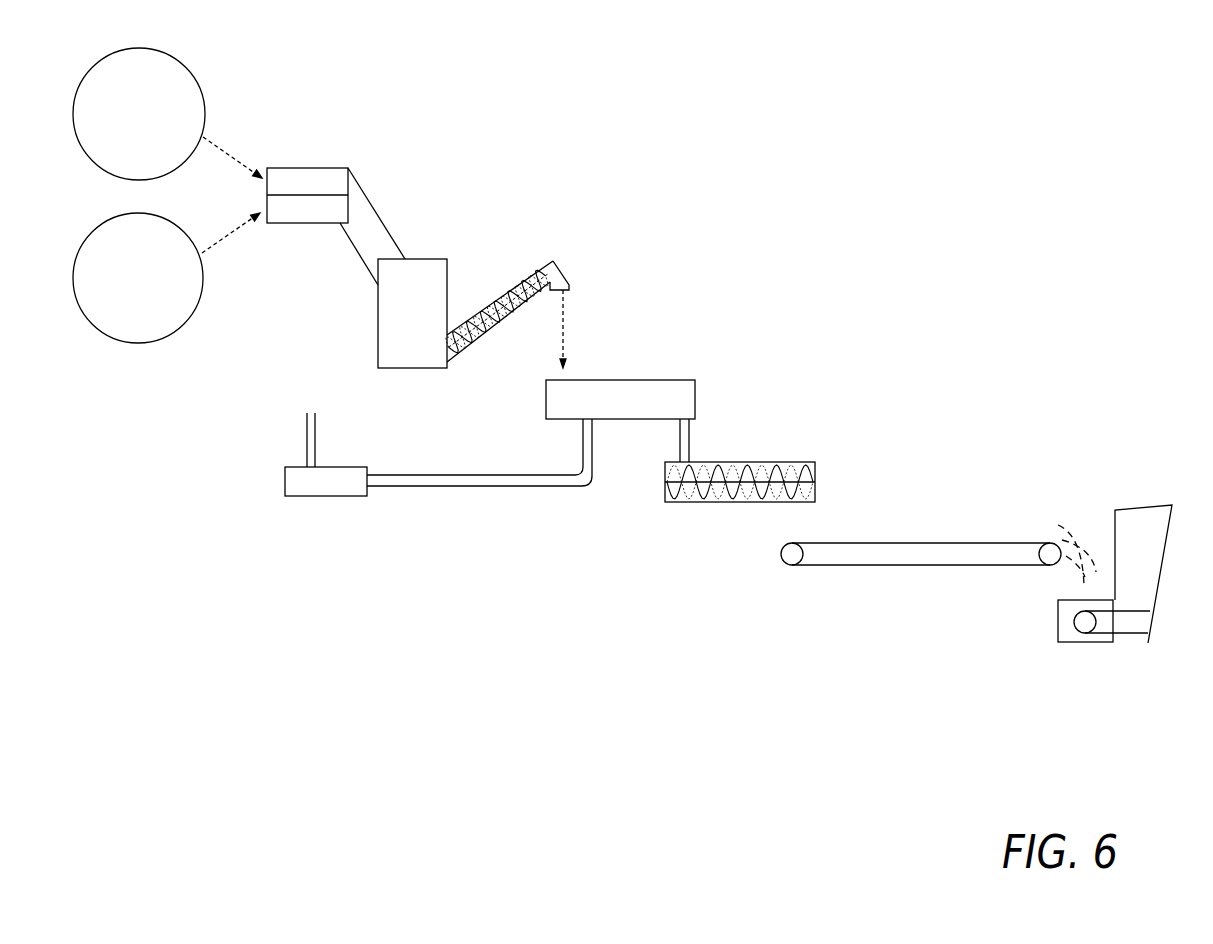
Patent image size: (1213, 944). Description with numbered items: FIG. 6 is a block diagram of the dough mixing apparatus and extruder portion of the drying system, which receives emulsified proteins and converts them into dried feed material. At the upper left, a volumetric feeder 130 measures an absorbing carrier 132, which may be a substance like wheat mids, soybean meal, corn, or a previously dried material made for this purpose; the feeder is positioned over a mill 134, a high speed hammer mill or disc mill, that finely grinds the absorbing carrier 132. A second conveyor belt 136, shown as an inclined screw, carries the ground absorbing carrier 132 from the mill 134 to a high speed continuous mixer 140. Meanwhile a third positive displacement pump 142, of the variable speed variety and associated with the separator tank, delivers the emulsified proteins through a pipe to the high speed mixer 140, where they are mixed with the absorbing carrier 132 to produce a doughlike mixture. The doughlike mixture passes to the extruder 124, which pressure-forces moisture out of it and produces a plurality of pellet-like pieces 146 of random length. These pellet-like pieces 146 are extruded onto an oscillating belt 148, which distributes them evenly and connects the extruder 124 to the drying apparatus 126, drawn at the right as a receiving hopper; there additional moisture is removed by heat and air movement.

The extruder 124 is at (748, 462).
The drying apparatus 126 is at (1147, 485).
The volumetric feeder 130 is at (317, 168).
The absorbing carrier 132 is at (162, 343).
The mill 134 is at (428, 259).
The second conveyor belt 136 is at (510, 287).
The high speed continuous mixer 140 is at (622, 380).
The third positive displacement pump 142 is at (333, 496).
The pellet-like pieces 146 is at (1066, 525).
The oscillating belt 148 is at (858, 543).